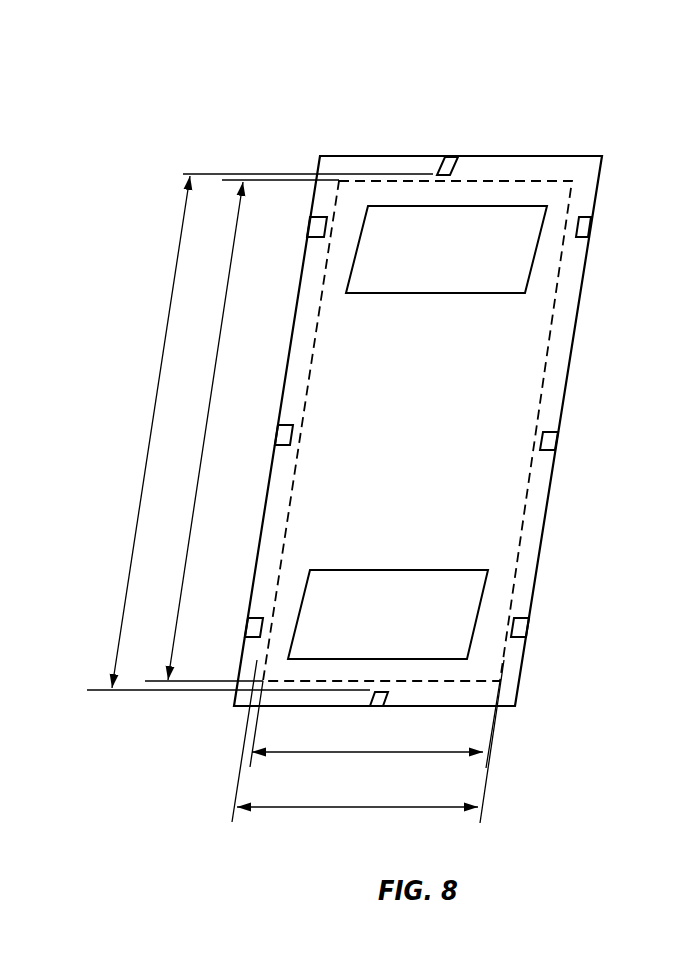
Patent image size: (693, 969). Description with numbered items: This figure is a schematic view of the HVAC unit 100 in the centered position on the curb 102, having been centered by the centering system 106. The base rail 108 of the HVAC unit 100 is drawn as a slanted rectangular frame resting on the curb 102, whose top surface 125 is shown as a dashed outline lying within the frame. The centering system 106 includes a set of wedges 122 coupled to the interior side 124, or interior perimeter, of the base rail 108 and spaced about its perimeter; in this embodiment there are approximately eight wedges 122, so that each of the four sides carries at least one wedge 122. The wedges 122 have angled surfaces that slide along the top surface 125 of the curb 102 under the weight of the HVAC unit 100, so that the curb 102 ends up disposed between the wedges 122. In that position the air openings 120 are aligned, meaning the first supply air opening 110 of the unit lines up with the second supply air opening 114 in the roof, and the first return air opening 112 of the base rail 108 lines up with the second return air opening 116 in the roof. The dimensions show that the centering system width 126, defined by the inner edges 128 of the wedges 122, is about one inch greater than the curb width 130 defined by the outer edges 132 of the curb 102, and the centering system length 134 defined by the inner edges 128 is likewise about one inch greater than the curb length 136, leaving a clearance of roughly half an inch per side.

The HVAC unit 100 is at (600, 78).
The curb 102 is at (567, 245).
The centering system 106 is at (568, 437).
The base rail 108 is at (570, 362).
The first supply air opening 110 is at (548, 221).
The first return air opening 112 is at (473, 637).
The second supply air opening 114 is at (537, 252).
The second return air opening 116 is at (484, 595).
The air openings 120 is at (418, 431).
The wedges 122 is at (450, 156).
The interior side 124 is at (571, 312).
The top surface 125 is at (507, 465).
The centering system width 126 is at (358, 808).
The inner edges 128 is at (447, 172).
The curb width 130 is at (368, 755).
The outer edges 132 is at (523, 510).
The centering system length 134 is at (150, 437).
The curb length 136 is at (207, 423).